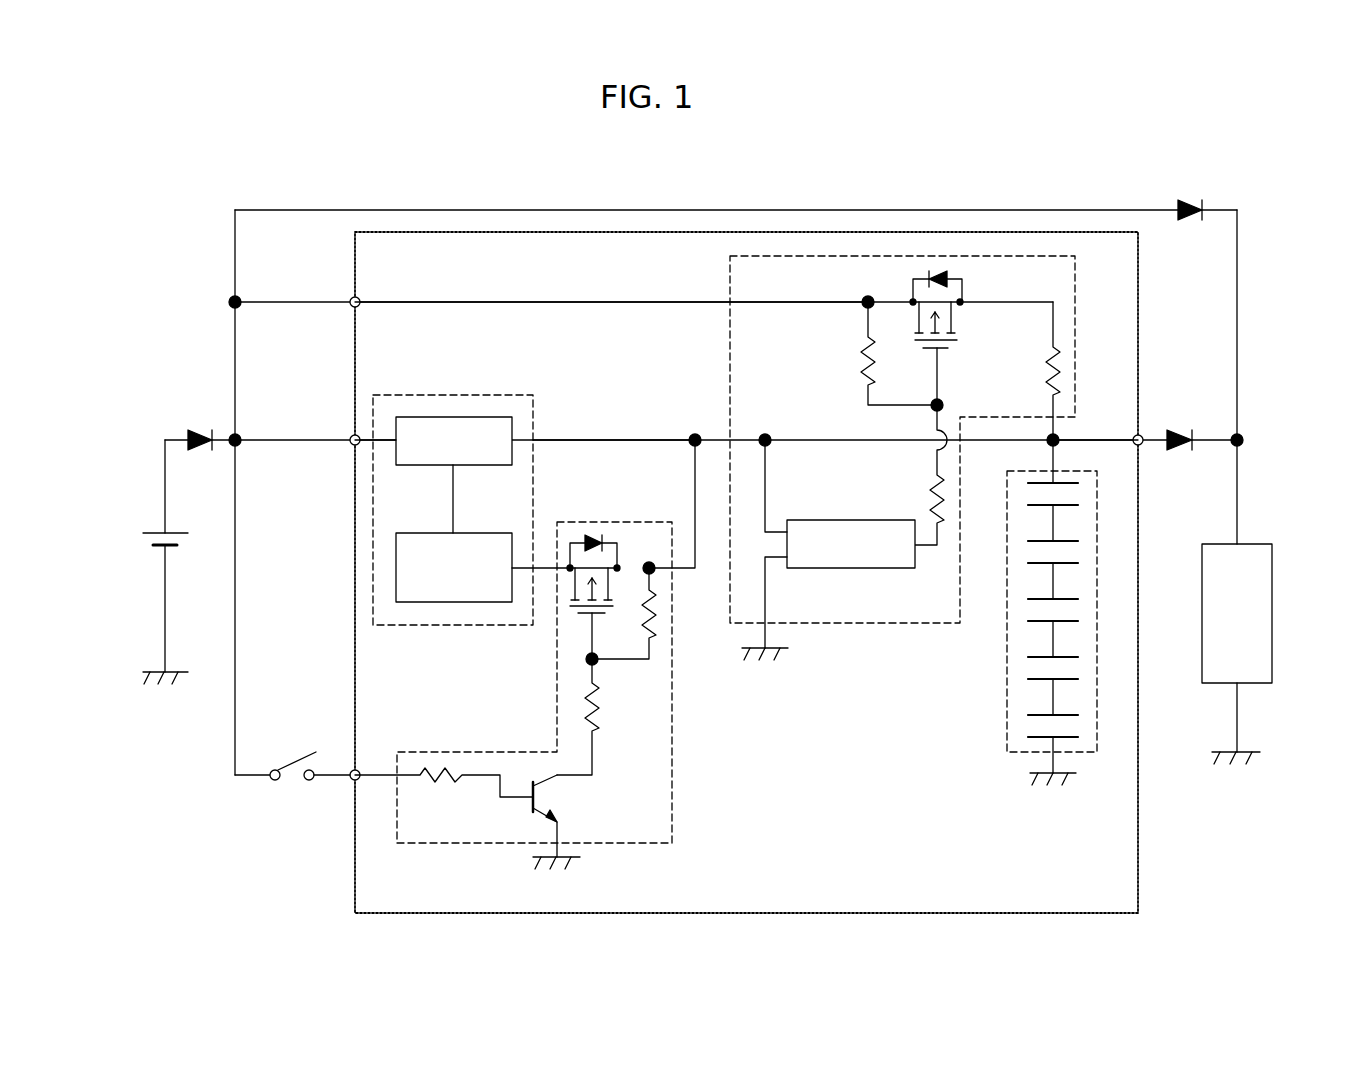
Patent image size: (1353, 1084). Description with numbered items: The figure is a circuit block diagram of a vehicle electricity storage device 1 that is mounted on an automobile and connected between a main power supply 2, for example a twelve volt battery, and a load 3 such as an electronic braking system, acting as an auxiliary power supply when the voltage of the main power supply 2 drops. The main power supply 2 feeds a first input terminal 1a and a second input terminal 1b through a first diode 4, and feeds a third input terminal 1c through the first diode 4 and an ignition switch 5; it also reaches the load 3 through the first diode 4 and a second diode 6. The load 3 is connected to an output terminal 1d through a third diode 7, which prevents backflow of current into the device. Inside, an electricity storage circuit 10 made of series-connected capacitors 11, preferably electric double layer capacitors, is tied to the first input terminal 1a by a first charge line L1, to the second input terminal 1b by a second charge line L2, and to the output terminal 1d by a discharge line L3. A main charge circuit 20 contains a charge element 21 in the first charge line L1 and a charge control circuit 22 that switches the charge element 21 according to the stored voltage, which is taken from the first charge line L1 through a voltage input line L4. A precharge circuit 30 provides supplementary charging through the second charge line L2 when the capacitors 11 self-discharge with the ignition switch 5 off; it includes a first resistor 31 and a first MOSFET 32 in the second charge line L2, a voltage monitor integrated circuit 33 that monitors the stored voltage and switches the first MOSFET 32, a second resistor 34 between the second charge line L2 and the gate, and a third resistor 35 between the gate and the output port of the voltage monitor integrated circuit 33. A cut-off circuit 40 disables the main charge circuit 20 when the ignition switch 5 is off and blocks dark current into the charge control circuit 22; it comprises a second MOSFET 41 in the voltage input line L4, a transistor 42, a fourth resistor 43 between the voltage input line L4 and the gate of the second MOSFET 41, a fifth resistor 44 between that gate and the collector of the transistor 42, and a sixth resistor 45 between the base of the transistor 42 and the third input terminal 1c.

The vehicle electricity storage device 1 is at (398, 227).
The first input terminal 1a is at (350, 450).
The second input terminal 1b is at (350, 312).
The third input terminal 1c is at (350, 767).
The output terminal 1d is at (1145, 452).
The main power supply 2 is at (150, 520).
The load 3 is at (1252, 542).
The first diode 4 is at (200, 425).
The ignition switch 5 is at (298, 748).
The second diode 6 is at (1193, 230).
The third diode 7 is at (1180, 425).
The electricity storage circuit 10 is at (1098, 608).
The capacitors 11 is at (1025, 495).
The main charge circuit 20 is at (437, 393).
The charge element 21 is at (480, 415).
The charge control circuit 22 is at (450, 627).
The precharge circuit 30 is at (728, 378).
The first resistor 31 is at (1060, 342).
The first MOSFET 32 is at (940, 265).
The voltage monitor integrated circuit 33 is at (847, 573).
The second resistor 34 is at (855, 357).
The third resistor 35 is at (925, 505).
The cut-off circuit 40 is at (672, 755).
The second MOSFET 41 is at (590, 533).
The transistor 42 is at (535, 832).
The fourth resistor 43 is at (665, 632).
The fifth resistor 44 is at (607, 712).
The sixth resistor 45 is at (440, 792).
The first charge line L1 is at (618, 438).
The second charge line L2 is at (600, 300).
The discharge line L3 is at (1090, 437).
The voltage input line L4 is at (695, 520).